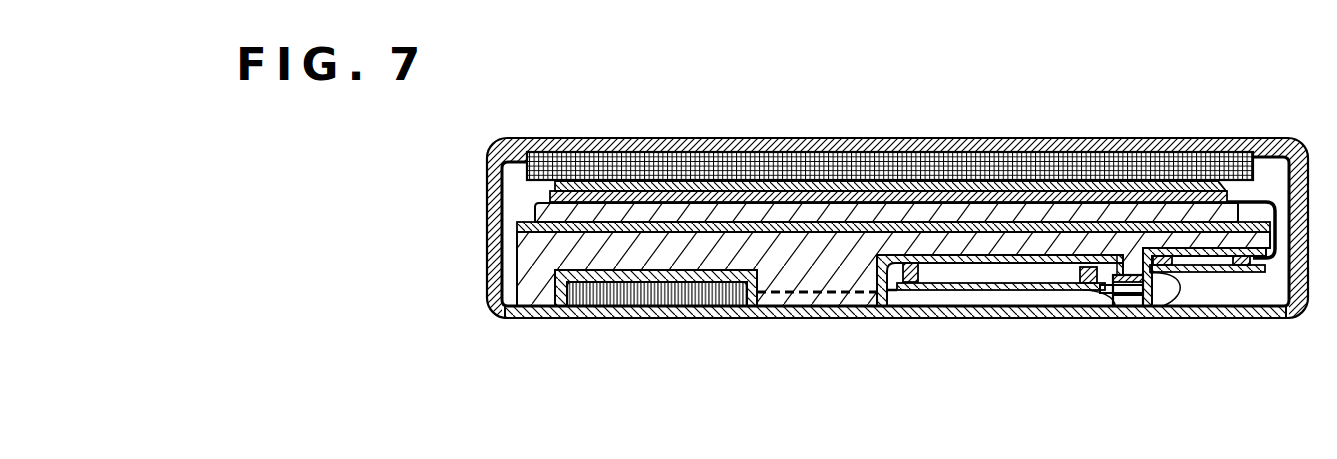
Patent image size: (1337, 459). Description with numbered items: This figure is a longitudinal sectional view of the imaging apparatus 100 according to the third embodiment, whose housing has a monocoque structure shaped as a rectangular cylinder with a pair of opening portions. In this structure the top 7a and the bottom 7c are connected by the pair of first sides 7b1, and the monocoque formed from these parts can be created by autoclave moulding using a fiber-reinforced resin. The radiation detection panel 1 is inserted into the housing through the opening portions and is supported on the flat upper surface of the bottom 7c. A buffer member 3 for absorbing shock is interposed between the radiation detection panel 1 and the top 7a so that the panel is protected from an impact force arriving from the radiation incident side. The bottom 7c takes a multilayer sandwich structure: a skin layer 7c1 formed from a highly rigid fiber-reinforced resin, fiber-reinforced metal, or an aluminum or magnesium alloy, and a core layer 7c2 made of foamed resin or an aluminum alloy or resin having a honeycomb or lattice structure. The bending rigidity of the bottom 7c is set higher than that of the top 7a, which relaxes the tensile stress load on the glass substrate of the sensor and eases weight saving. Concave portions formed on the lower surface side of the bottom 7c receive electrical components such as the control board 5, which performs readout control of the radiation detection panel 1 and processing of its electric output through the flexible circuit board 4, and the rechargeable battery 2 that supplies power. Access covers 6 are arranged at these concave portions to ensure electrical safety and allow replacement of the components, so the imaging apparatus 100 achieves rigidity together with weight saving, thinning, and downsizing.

The imaging apparatus 100 is at (455, 277).
The radiation detection panel 1 is at (532, 208).
The rechargeable battery 2 is at (673, 298).
The buffer member 3 is at (805, 138).
The flexible circuit board 4 is at (1265, 298).
The control board 5 is at (1137, 308).
The access cover 6 is at (740, 312).
The top 7a is at (1176, 138).
The first side 7b1 is at (487, 218).
The bottom 7c is at (590, 396).
The skin layer 7c1 is at (533, 232).
The core layer 7c2 is at (537, 290).